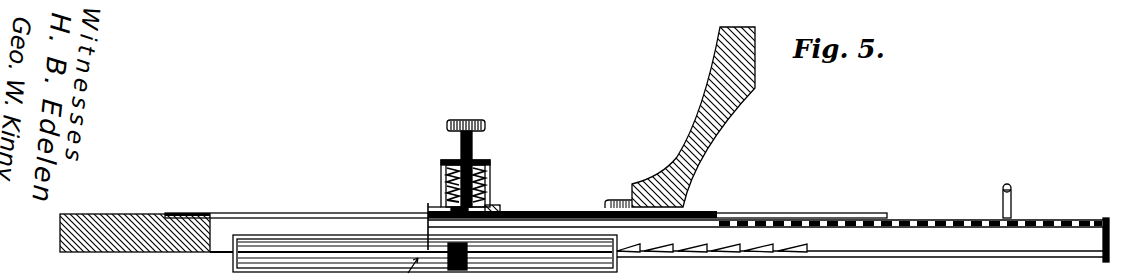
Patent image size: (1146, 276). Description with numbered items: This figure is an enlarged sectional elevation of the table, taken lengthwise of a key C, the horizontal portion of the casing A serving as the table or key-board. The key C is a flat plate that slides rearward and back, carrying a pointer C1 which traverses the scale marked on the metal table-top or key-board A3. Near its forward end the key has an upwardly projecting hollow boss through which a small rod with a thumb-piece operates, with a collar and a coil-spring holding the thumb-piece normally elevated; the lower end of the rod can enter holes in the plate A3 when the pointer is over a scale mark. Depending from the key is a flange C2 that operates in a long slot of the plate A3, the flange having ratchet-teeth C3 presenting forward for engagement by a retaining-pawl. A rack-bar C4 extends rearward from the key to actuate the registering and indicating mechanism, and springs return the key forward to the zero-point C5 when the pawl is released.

The casing A is at (680, 117).
The table-top or key-board A3 is at (302, 209).
The key C is at (490, 185).
The pointer C1 is at (472, 156).
The depending flange C2 is at (481, 122).
The ratchet-teeth C3 is at (421, 167).
The rack-bar C4 is at (951, 214).
The zero-point C5 is at (1012, 193).